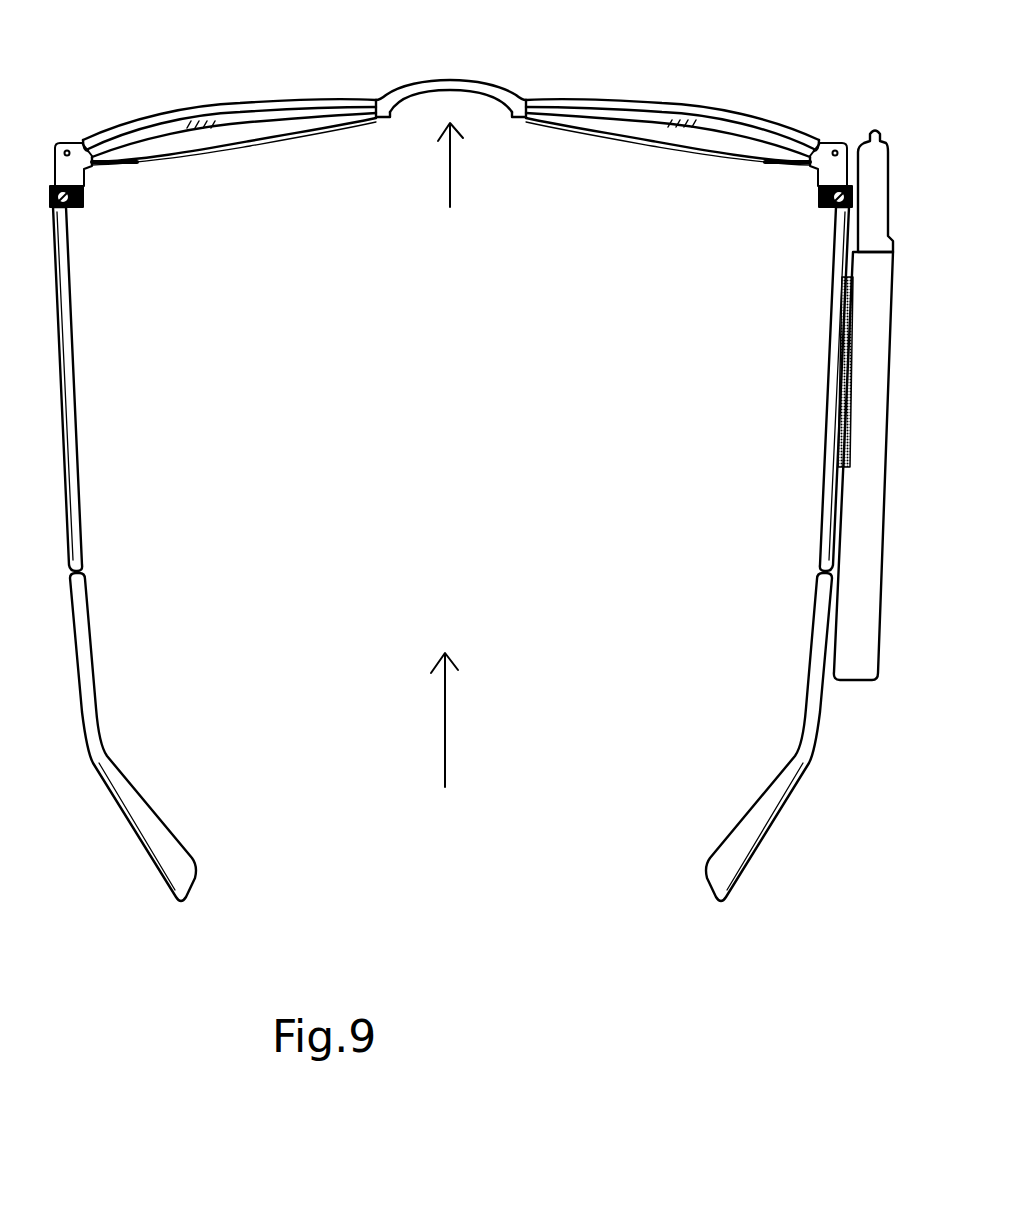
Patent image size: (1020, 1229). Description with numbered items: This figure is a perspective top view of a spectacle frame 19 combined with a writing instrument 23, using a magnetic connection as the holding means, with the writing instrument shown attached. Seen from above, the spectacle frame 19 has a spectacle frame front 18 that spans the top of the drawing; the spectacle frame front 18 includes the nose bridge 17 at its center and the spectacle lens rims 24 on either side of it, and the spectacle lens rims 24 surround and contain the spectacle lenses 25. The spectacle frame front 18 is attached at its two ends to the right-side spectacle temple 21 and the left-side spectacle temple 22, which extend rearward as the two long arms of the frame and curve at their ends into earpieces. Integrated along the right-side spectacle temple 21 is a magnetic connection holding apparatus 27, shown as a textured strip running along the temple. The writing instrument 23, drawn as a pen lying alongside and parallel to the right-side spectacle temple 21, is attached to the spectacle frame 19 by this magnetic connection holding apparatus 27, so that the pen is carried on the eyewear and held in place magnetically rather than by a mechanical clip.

The nose bridge 17 is at (418, 85).
The spectacle frame front 18 is at (453, 181).
The spectacle frame 19 is at (446, 736).
The right-side spectacle temple 21 is at (833, 237).
The left-side spectacle temple 22 is at (63, 348).
The writing instrument 23 is at (853, 662).
The spectacle lens rims 24 is at (182, 145).
The spectacle lenses 25 is at (257, 117).
The magnetic connection holding apparatus 27 is at (840, 392).